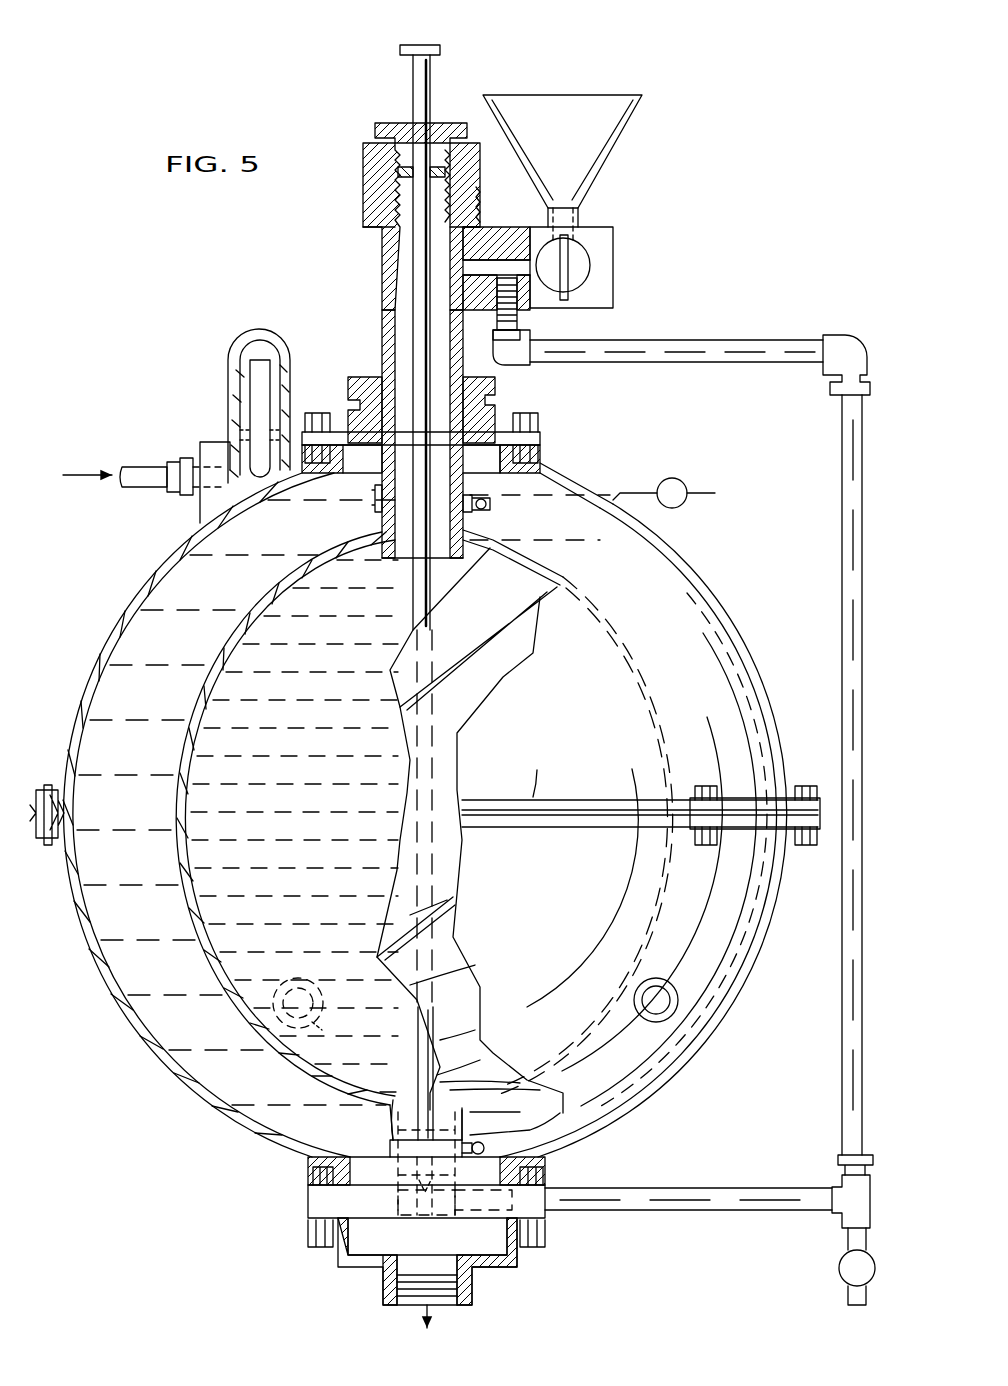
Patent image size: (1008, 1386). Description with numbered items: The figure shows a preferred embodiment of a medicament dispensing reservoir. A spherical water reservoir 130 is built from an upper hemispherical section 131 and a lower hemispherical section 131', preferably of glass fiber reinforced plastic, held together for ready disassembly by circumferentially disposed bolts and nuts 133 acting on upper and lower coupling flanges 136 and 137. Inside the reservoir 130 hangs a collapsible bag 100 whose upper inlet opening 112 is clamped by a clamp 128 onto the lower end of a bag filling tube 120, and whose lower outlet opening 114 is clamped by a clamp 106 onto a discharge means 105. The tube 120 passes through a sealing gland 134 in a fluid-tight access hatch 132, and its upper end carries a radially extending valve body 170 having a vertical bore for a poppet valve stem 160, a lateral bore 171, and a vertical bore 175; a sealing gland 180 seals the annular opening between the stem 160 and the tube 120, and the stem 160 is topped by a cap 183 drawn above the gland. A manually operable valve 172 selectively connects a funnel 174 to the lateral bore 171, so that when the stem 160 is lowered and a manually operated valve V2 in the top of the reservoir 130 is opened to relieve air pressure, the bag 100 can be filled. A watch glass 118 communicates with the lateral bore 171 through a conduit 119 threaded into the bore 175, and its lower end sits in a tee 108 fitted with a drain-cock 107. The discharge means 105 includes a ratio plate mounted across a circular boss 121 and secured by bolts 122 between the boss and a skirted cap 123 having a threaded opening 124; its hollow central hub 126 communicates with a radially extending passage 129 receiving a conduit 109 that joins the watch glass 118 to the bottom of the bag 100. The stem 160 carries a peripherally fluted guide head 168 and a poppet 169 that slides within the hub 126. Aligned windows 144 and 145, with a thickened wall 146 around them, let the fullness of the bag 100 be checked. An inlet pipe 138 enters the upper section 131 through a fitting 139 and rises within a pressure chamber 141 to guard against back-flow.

The collapsible bag 100 is at (248, 616).
The discharge means 105 is at (360, 1158).
The clamp 106 is at (386, 1126).
The drain-cock 107 is at (838, 1270).
The tee 108 is at (869, 1196).
The conduit 109 is at (702, 1188).
The inlet opening 112 is at (372, 500).
The outlet opening 114 is at (472, 1112).
The watch glass 118 is at (852, 510).
The conduit 119 is at (686, 341).
The bag filling tube 120 is at (382, 326).
The circular boss 121 is at (306, 1190).
The bolts 122 is at (312, 1248).
The skirted cap 123 is at (360, 1270).
The threaded opening 124 is at (418, 1306).
The hollow central hub 126 is at (397, 1196).
The clamp 128 is at (493, 505).
The radially extending passage 129 is at (478, 1212).
The spherical water reservoir 130 is at (716, 570).
The upper hemispherical section 131 is at (676, 869).
The lower hemispherical section 131' is at (662, 843).
The access hatch 132 is at (544, 446).
The bolts and nuts 133 is at (798, 786).
The sealing gland 134 is at (342, 386).
The upper coupling flange 136 is at (565, 800).
The lower coupling flange 137 is at (592, 830).
The inlet pipe 138 is at (148, 465).
The fitting 139 is at (194, 508).
The pressure chamber 141 is at (236, 346).
The window 144 is at (668, 990).
The window 145 is at (313, 992).
The thickened wall 146 is at (314, 1026).
The poppet valve stem 160 is at (431, 82).
The peripherally fluted guide head 168 is at (482, 1128).
The poppet 169 is at (486, 1150).
The valve body 170 is at (612, 226).
The lateral bore 171 is at (493, 268).
The manually operable valve 172 is at (583, 266).
The funnel 174 is at (610, 122).
The vertical bore 175 is at (518, 284).
The sealing gland 180 is at (362, 158).
The cap 183 is at (431, 46).
The manually operated valve V2 is at (664, 493).